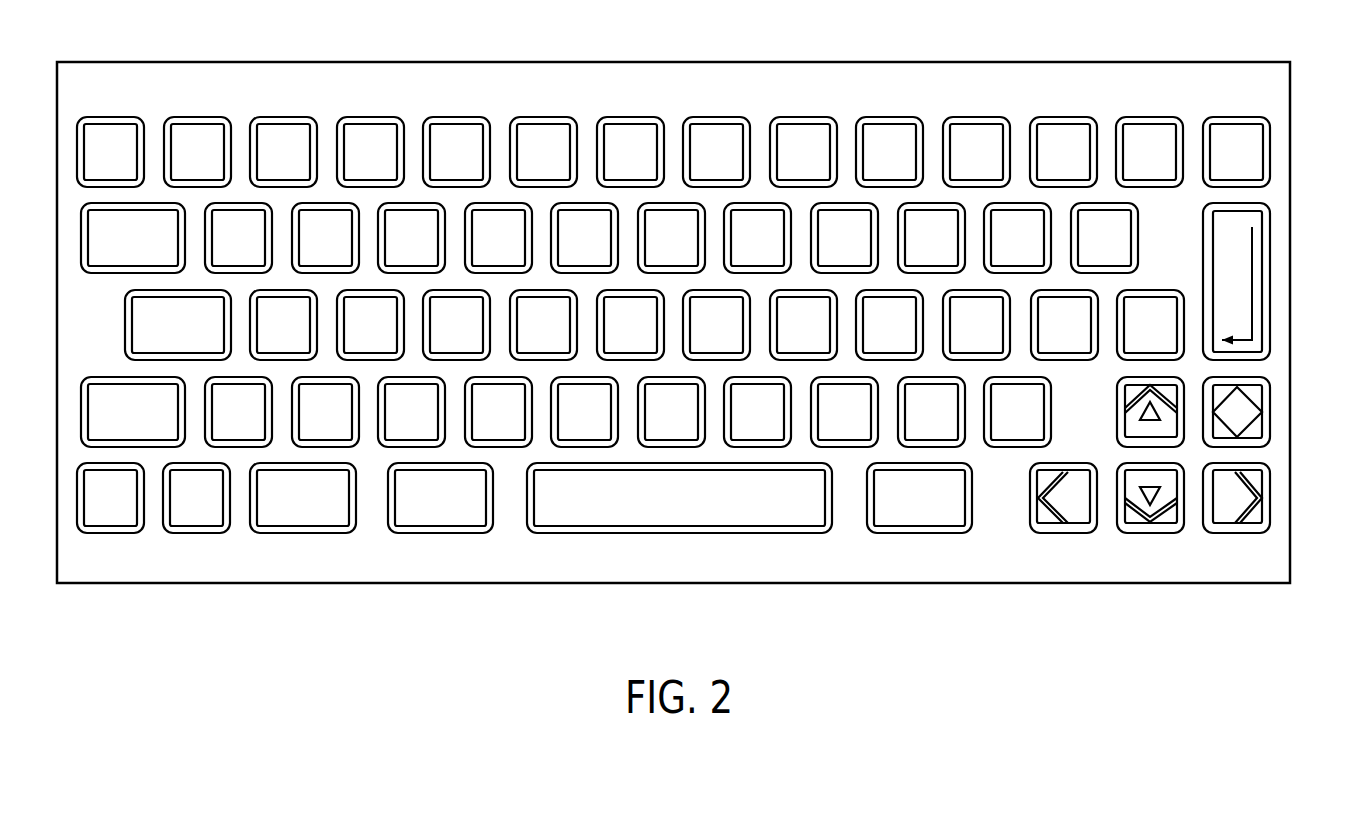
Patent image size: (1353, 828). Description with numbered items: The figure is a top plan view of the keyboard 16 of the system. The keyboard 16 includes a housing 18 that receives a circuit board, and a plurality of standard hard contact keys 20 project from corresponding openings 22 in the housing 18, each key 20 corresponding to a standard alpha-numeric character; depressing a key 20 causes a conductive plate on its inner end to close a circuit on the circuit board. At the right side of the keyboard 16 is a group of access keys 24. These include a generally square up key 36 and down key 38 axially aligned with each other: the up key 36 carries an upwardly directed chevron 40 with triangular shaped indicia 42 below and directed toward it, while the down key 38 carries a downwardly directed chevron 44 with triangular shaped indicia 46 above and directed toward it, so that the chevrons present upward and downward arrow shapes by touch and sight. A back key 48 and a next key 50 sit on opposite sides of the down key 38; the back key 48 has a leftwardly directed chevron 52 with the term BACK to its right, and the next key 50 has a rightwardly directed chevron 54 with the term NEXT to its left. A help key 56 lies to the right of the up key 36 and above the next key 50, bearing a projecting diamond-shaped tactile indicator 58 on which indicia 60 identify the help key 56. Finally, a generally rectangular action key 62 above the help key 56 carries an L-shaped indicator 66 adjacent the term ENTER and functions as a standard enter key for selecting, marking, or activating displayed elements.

The keyboard 16 is at (463, 620).
The housing 18 is at (550, 584).
The hard contact keys 20 is at (805, 118).
The openings 22 is at (453, 121).
The access keys 24 is at (1167, 454).
The up key 36 is at (1118, 373).
The down key 38 is at (1146, 552).
The upwardly directed chevron 40 is at (1122, 404).
The triangular shaped indicia 42 is at (1142, 413).
The downwardly directed chevron 44 is at (1142, 515).
The triangular shaped indicia 46 is at (1143, 492).
The back key 48 is at (1039, 539).
The next key 50 is at (1241, 543).
The leftwardly directed chevron 52 is at (1062, 480).
The rightwardly directed chevron 54 is at (1233, 513).
The help key 56 is at (1254, 382).
The diamond-shaped tactile indicator 58 is at (1245, 422).
The indicia 60 is at (1253, 402).
The action key 62 is at (1264, 220).
The indicator 66 is at (1248, 218).